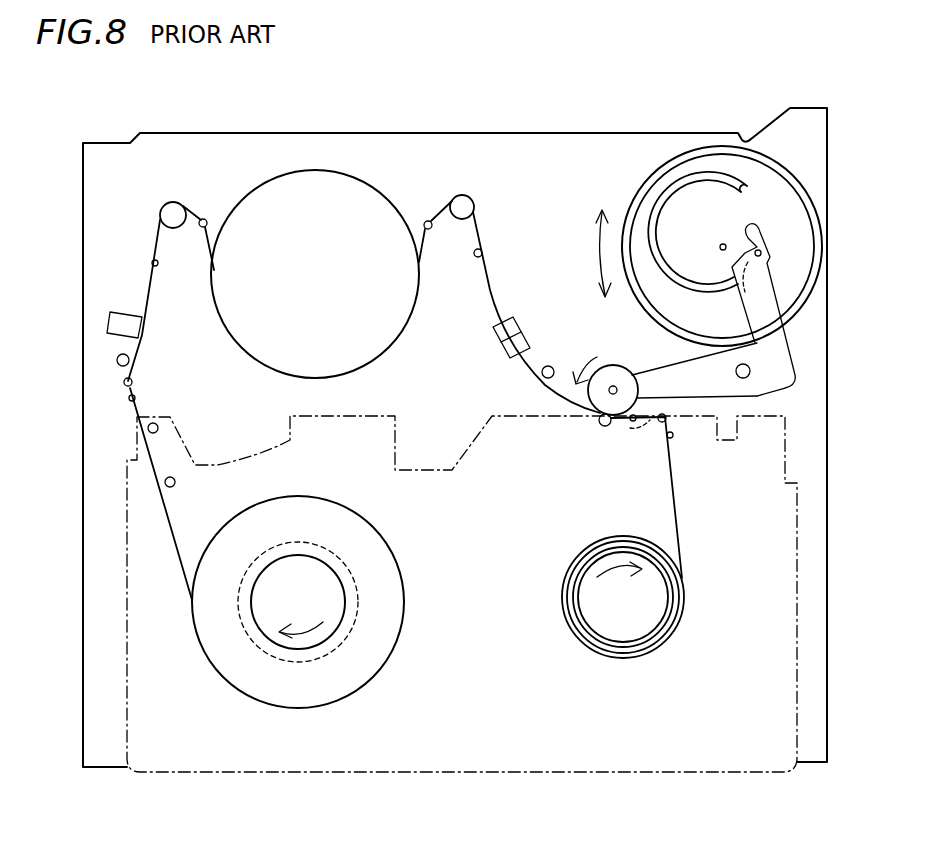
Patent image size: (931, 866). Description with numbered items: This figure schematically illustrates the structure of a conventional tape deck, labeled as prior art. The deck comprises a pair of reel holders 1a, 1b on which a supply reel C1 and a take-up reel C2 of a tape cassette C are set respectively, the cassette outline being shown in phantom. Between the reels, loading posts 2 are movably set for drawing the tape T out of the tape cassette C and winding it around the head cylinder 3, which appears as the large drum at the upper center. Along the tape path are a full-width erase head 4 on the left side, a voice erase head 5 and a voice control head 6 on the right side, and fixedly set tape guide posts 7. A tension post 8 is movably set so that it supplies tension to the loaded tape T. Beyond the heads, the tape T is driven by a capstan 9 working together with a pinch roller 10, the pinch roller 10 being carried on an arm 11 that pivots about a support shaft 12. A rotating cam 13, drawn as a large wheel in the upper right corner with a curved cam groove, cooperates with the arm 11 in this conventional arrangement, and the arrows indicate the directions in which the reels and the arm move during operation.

The reel holder 1a is at (343, 642).
The reel holder 1b is at (663, 642).
The loading posts 2 is at (173, 208).
The head cylinder 3 is at (316, 190).
The full-width erase head 4 is at (125, 326).
The voice erase head 5 is at (517, 322).
The voice control head 6 is at (545, 362).
The tape guide posts 7 is at (117, 359).
The tension post 8 is at (124, 382).
The capstan 9 is at (611, 424).
The pinch roller 10 is at (625, 398).
The arm 11 is at (728, 390).
The support shaft 12 is at (750, 370).
The rotating cam 13 is at (803, 243).
The tape T is at (482, 233).
The tape cassette C is at (127, 480).
The supply reel C1 is at (270, 610).
The take-up reel C2 is at (607, 623).